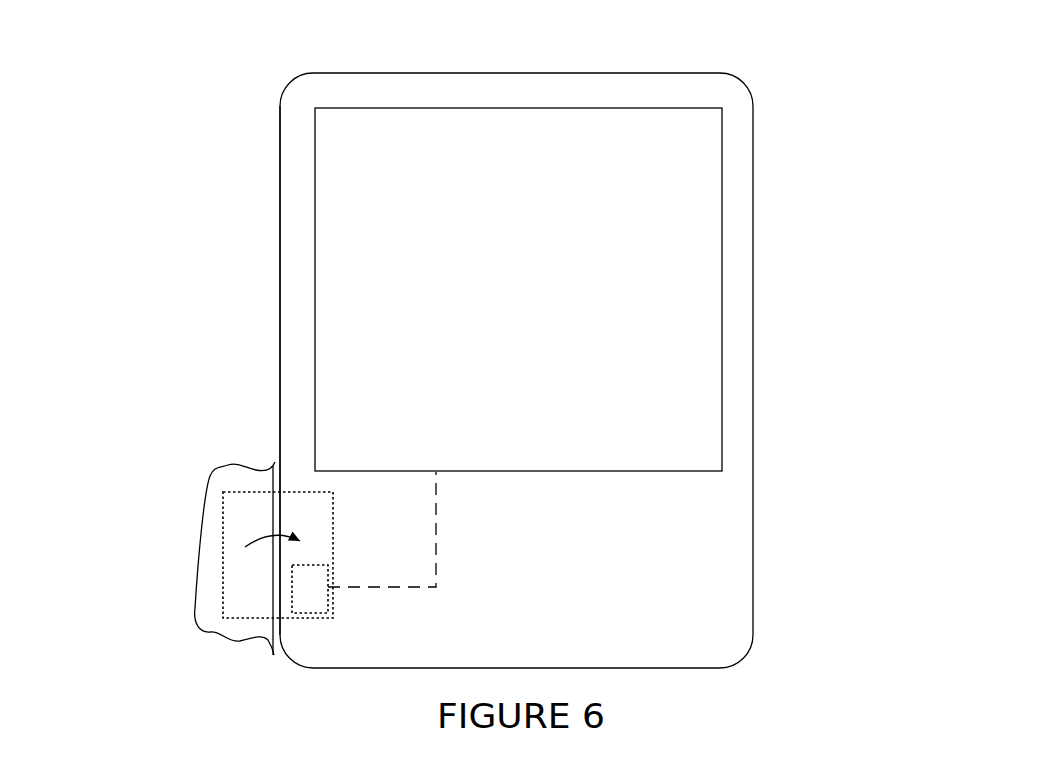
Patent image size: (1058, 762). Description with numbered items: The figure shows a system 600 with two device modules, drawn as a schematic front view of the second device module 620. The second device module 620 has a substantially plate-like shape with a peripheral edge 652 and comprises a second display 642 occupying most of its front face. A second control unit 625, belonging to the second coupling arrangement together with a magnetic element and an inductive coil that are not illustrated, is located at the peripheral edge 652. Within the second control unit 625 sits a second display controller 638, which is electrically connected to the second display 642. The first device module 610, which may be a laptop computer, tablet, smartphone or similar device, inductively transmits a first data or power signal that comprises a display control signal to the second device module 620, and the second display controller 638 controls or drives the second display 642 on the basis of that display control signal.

The system 600 is at (203, 118).
The first device module 610 is at (208, 527).
The second device module 620 is at (737, 343).
The second control unit 625 is at (306, 620).
The second display controller 638 is at (330, 602).
The second display 642 is at (722, 213).
The peripheral edge 652 is at (277, 343).